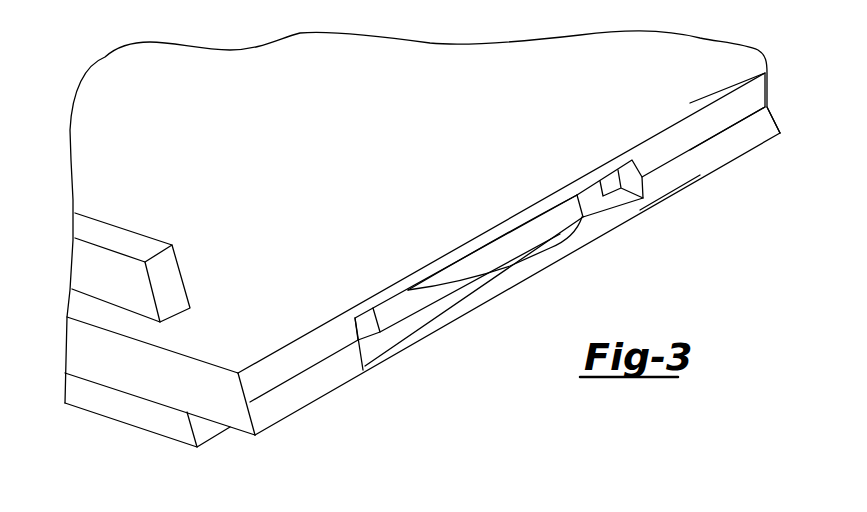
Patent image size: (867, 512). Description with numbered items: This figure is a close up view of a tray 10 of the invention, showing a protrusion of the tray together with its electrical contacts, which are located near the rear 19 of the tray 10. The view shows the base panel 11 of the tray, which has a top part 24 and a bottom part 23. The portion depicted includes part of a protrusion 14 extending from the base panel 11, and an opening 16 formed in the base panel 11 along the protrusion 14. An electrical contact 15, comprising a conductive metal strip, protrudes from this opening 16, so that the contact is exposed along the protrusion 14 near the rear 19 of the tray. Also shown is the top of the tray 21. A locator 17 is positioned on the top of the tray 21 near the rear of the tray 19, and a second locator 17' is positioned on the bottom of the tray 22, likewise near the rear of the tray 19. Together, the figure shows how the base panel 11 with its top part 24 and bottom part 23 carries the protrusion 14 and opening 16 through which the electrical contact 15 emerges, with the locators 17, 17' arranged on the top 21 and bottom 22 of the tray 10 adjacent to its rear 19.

The tray 10 is at (491, 72).
The base panel 11 is at (238, 418).
The protrusion 14 is at (670, 188).
The electrical contact 15 is at (480, 280).
The opening 16 is at (590, 217).
The locator 17 is at (108, 267).
The locator 17' is at (196, 455).
The rear of the tray 19 is at (78, 355).
The top of the tray 21 is at (117, 93).
The bottom of the tray 22 is at (412, 346).
The bottom part 23 is at (737, 148).
The top part 24 is at (703, 127).